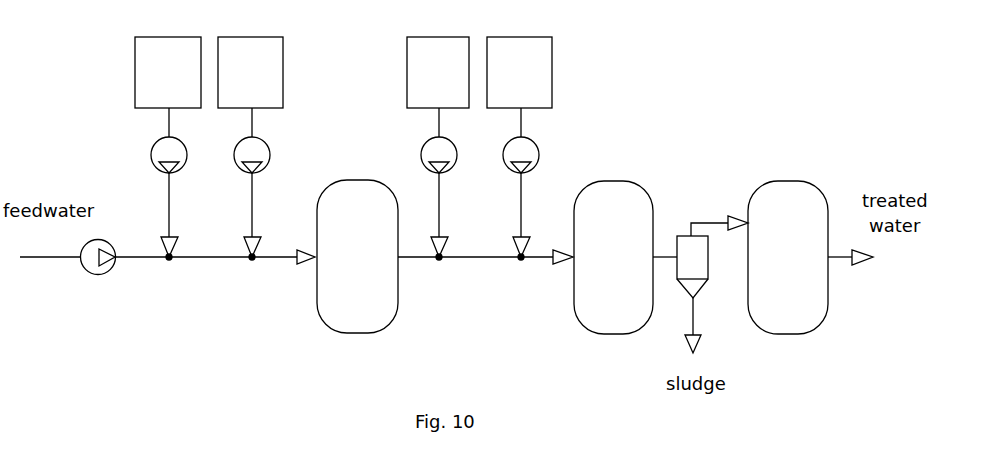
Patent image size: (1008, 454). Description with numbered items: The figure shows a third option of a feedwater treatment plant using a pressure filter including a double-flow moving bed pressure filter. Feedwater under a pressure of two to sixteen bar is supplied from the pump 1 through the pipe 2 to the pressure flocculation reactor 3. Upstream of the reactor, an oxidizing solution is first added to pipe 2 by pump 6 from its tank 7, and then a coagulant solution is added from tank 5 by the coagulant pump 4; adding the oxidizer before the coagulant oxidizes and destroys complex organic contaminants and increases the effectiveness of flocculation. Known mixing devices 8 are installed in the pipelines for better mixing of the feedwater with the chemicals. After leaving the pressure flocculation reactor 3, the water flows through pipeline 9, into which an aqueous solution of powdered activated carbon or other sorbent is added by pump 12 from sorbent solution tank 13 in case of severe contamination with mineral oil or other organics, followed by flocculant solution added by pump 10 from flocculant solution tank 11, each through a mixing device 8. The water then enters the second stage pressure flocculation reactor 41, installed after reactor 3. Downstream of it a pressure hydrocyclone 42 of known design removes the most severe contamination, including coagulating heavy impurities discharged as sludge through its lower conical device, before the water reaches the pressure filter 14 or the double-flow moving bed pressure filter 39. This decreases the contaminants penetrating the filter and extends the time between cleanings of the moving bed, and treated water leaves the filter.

The pump 1 is at (94, 263).
The pipe 2 is at (215, 255).
The pressure flocculation reactor 3 is at (323, 322).
The coagulant pump 4 is at (257, 149).
The coagulant solution tank 5 is at (270, 78).
The oxidizing solution pump 6 is at (158, 149).
The oxidizing solution tank 7 is at (150, 78).
The mixing device 8 is at (168, 263).
The pipeline 9 is at (484, 255).
The flocculant pump 10 is at (528, 149).
The flocculant solution tank 11 is at (540, 78).
The sorbent pump 12 is at (428, 149).
The sorbent solution tank 13 is at (418, 78).
The second stage pressure flocculation reactor 41 is at (582, 322).
The pressure hydrocyclone 42 is at (683, 236).
The pressure filter 14 is at (813, 266).
The double-flow moving bed pressure filter 39 is at (874, 349).